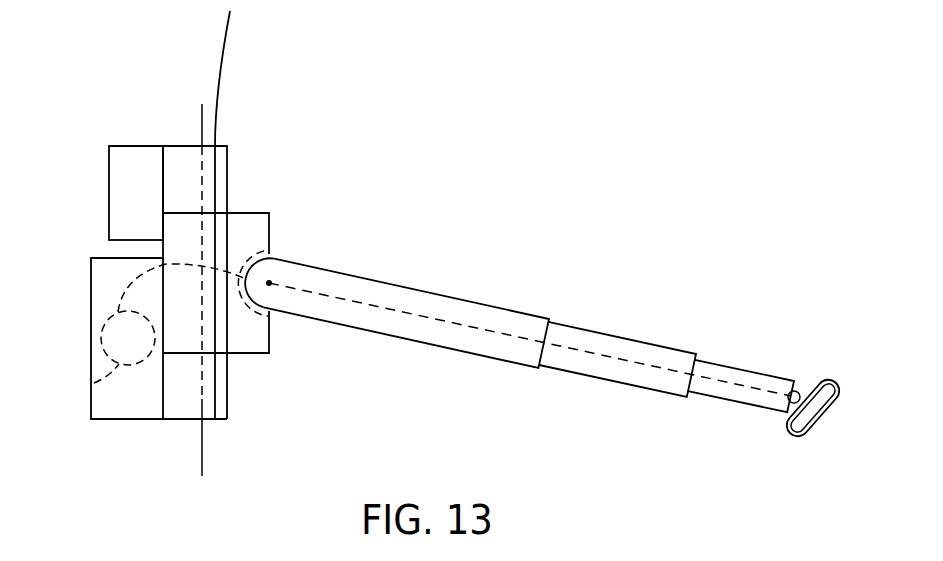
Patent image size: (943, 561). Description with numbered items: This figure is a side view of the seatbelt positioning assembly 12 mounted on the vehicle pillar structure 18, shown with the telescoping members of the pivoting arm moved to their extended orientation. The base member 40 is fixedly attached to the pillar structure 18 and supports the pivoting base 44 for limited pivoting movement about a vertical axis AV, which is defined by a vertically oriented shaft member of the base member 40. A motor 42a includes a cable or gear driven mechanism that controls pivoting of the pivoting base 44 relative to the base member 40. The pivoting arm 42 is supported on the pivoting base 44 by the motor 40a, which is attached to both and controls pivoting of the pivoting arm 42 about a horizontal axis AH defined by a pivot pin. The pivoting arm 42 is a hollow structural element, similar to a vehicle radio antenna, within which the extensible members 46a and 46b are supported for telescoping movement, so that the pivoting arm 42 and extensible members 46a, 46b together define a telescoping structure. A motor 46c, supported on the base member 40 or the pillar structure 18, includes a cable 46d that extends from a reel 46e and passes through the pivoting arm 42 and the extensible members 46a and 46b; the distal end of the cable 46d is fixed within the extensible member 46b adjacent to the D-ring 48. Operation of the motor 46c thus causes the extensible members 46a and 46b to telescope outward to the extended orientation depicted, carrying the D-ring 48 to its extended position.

The seatbelt positioning assembly 12 is at (127, 139).
The pillar structure 18 is at (227, 44).
The base member 40 is at (228, 172).
The motor 40a is at (285, 253).
The pivoting arm 42 is at (395, 340).
The motor 42a is at (130, 193).
The pivoting base 44 is at (247, 232).
The extensible member 46a is at (602, 380).
The extensible member 46b is at (743, 367).
The motor 46c is at (90, 282).
The cable 46d is at (444, 320).
The reel 46e is at (93, 382).
The D-ring 48 is at (810, 432).
The vertical axis AV is at (198, 119).
The horizontal axis AH is at (270, 284).